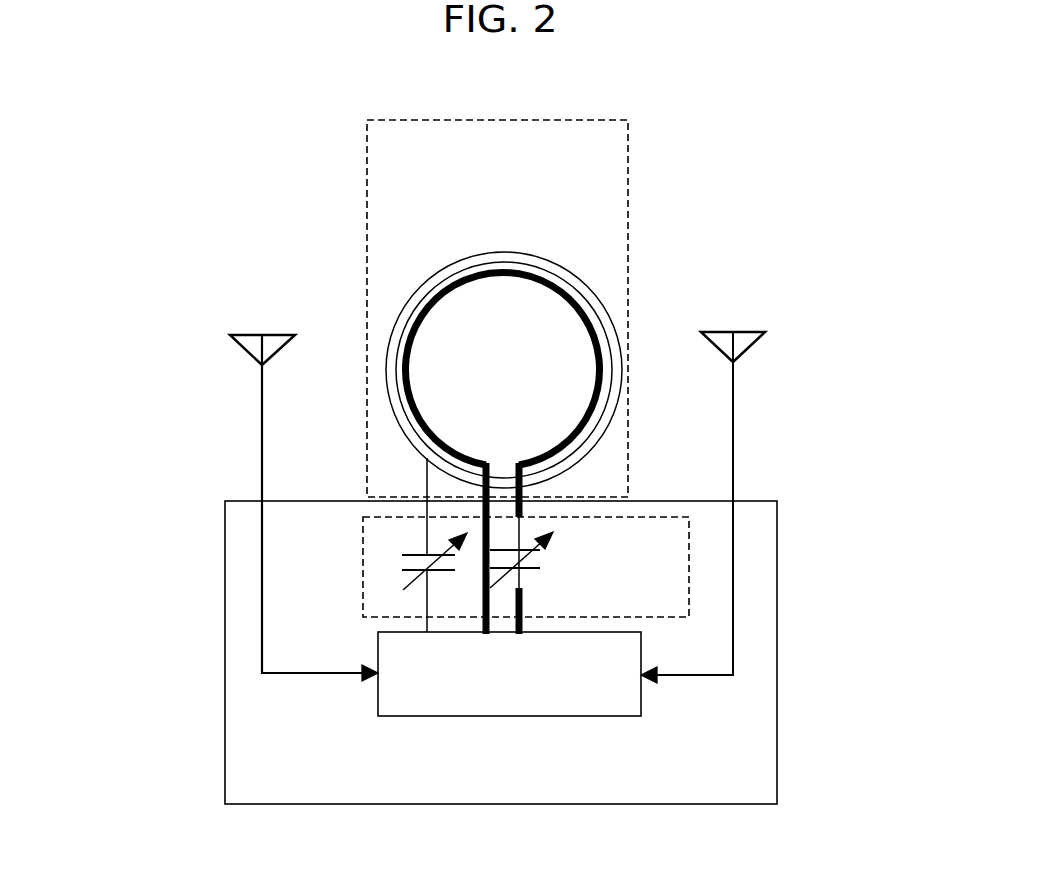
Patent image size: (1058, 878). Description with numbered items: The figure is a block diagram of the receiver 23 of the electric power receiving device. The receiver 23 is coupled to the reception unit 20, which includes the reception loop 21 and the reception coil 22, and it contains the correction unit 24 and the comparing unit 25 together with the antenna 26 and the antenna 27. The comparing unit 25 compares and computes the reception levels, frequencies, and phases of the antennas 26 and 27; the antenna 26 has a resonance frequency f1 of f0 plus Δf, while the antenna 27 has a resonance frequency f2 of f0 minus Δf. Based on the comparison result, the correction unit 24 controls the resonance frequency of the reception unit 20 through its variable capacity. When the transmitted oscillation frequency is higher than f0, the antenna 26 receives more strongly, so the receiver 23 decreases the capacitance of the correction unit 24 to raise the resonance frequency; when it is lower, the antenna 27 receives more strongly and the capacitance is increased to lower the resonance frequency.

The reception unit 20 is at (629, 272).
The reception loop 21 is at (469, 272).
The reception coil 22 is at (533, 262).
The receiver 23 is at (777, 716).
The correction unit 24 is at (362, 540).
The comparing unit 25 is at (378, 698).
The antenna 26 is at (249, 335).
The antenna 27 is at (721, 332).